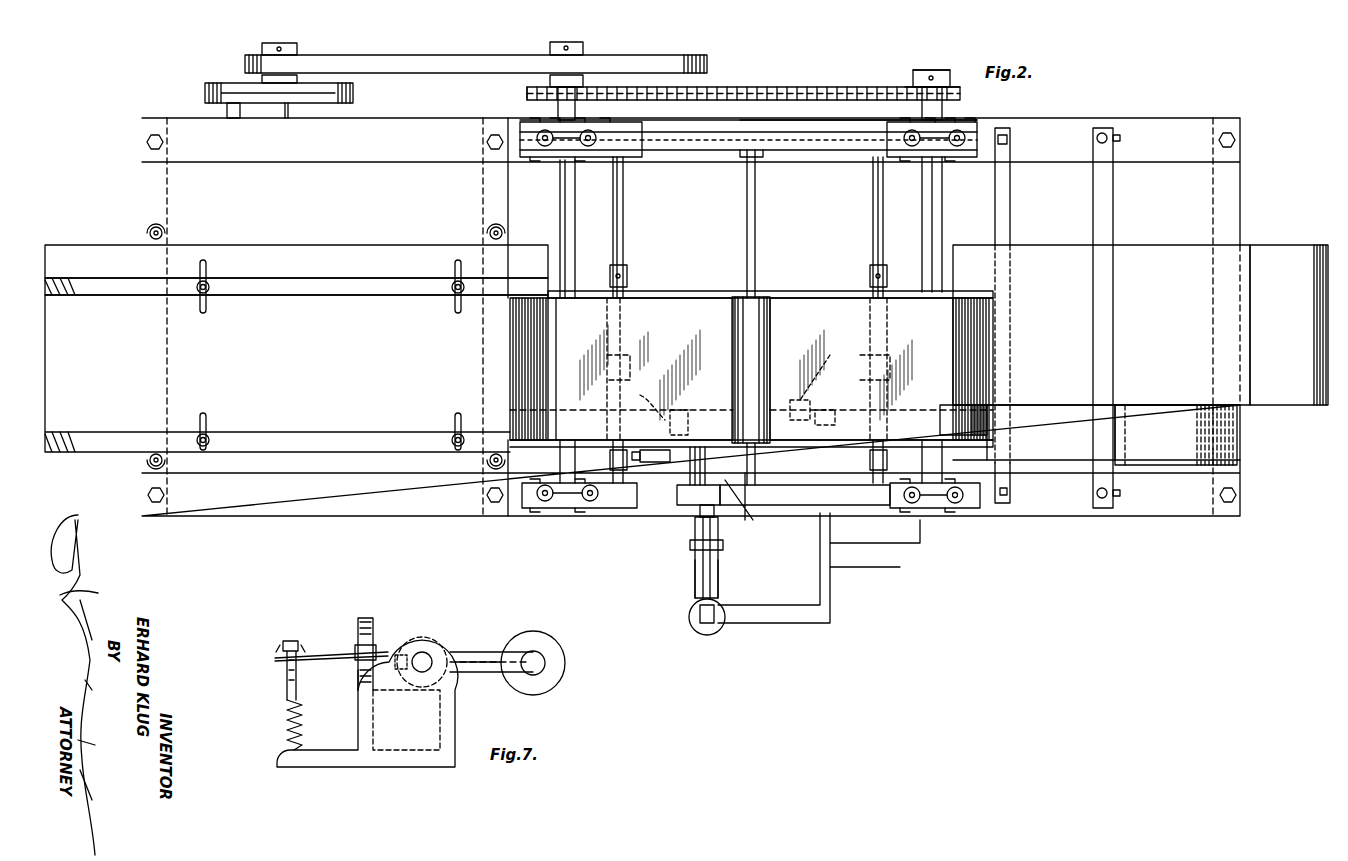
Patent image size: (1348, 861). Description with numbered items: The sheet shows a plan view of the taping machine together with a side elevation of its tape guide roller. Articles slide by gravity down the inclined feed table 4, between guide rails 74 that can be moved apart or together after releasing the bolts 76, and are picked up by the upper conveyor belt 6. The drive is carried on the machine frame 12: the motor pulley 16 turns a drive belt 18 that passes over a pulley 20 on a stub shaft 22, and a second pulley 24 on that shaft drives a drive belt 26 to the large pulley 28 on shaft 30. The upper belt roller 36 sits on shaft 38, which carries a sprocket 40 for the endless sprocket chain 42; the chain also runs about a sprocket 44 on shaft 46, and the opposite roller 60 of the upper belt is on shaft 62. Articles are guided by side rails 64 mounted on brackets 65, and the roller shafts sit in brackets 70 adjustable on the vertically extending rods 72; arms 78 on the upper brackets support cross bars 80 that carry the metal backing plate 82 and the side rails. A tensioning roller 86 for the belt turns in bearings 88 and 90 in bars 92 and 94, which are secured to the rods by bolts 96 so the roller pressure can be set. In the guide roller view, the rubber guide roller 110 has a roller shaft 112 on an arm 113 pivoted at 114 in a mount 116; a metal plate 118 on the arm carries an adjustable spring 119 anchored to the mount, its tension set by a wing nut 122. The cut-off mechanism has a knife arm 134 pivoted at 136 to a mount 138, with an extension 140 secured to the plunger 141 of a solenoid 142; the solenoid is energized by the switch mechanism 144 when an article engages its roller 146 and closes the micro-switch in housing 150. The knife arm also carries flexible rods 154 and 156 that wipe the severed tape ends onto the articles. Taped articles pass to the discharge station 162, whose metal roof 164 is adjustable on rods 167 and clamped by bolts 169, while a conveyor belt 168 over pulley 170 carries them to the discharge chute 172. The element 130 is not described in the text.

In FIG. 2, the inclined feed table 4 is at (364, 361).
In FIG. 2, the upper conveyor belt 6 is at (650, 292).
In FIG. 2, the machine frame 12 is at (138, 185).
In FIG. 2, the motor pulley 16 is at (222, 85).
In FIG. 2, the drive belt 18 is at (355, 94).
In FIG. 2, the pulley 20 is at (310, 104).
In FIG. 2, the stub shaft 22 is at (264, 110).
In FIG. 2, the pulley 24 is at (297, 50).
In FIG. 2, the drive belt 26 is at (407, 55).
In FIG. 2, the large pulley 28 is at (690, 55).
In FIG. 2, the shaft 30 is at (568, 42).
In FIG. 2, the roller or pulley 36 is at (590, 292).
In FIG. 2, the shaft 38 is at (556, 228).
In FIG. 2, the sprocket 40 is at (528, 95).
In FIG. 2, the endless sprocket chain 42 is at (815, 80).
In FIG. 2, the sprocket 44 is at (913, 78).
In FIG. 2, the shaft 46 is at (932, 70).
In FIG. 2, the conveyor belt roller or pulley 60 is at (955, 292).
In FIG. 2, the shaft 62 is at (940, 200).
In FIG. 2, the side rails 64 is at (682, 292).
In FIG. 2, the brackets 65 is at (625, 265).
In FIG. 2, the brackets 70 is at (560, 143).
In FIG. 2, the vertically extending rods 72 is at (590, 135).
In FIG. 2, the guide rails 74 is at (312, 290).
In FIG. 2, the bolts 76 is at (213, 290).
In FIG. 2, the downwardly extending arms 78 is at (610, 175).
In FIG. 2, the cross bars 80 is at (624, 206).
In FIG. 2, the metal backing plate 82 is at (755, 285).
In FIG. 2, the tensioning roller 86 is at (760, 300).
In FIG. 2, the bearing 88 is at (763, 157).
In FIG. 2, the bearing 90 is at (750, 490).
In FIG. 2, the bar 92 is at (810, 152).
In FIG. 2, the bar 94 is at (806, 513).
In FIG. 2, the bolts 96 is at (575, 150).
In FIG. 2, the rubber guide roller 110 is at (646, 399).
In FIG. 7, the rubber guide roller 110 is at (538, 632).
In FIG. 2, the roller shaft 112 is at (682, 413).
In FIG. 7, the roller shaft 112 is at (543, 655).
In FIG. 7, the arm 113 is at (470, 652).
In FIG. 7, the pivot 114 is at (425, 658).
In FIG. 7, the mount 116 is at (452, 708).
In FIG. 7, the metal plate 118 is at (322, 655).
In FIG. 7, the adjustable spring 119 is at (300, 718).
In FIG. 7, the wing nut 122 is at (290, 645).
In FIG. 2, the linkage 130 is at (680, 546).
In FIG. 2, the arm 134 is at (700, 530).
In FIG. 2, the pivot 136 is at (690, 548).
In FIG. 2, the mount 138 is at (693, 578).
In FIG. 2, the extension 140 is at (720, 576).
In FIG. 2, the plunger 141 is at (700, 622).
In FIG. 2, the solenoid 142 is at (718, 630).
In FIG. 2, the switch mechanism 144 is at (808, 402).
In FIG. 2, the roller 146 is at (823, 370).
In FIG. 2, the housing 150 is at (835, 415).
In FIG. 2, the flexible rod 154 is at (680, 475).
In FIG. 2, the flexible rod 156 is at (747, 503).
In FIG. 2, the discharge station 162 is at (1050, 532).
In FIG. 2, the metal roof 164 is at (1155, 245).
In FIG. 2, the vertically extending rods 167 is at (1103, 133).
In FIG. 2, the conveyor belt 168 is at (1065, 445).
In FIG. 2, the bolts 169 is at (1120, 138).
In FIG. 2, the pulley 170 is at (1152, 466).
In FIG. 2, the discharge chute 172 is at (1296, 258).